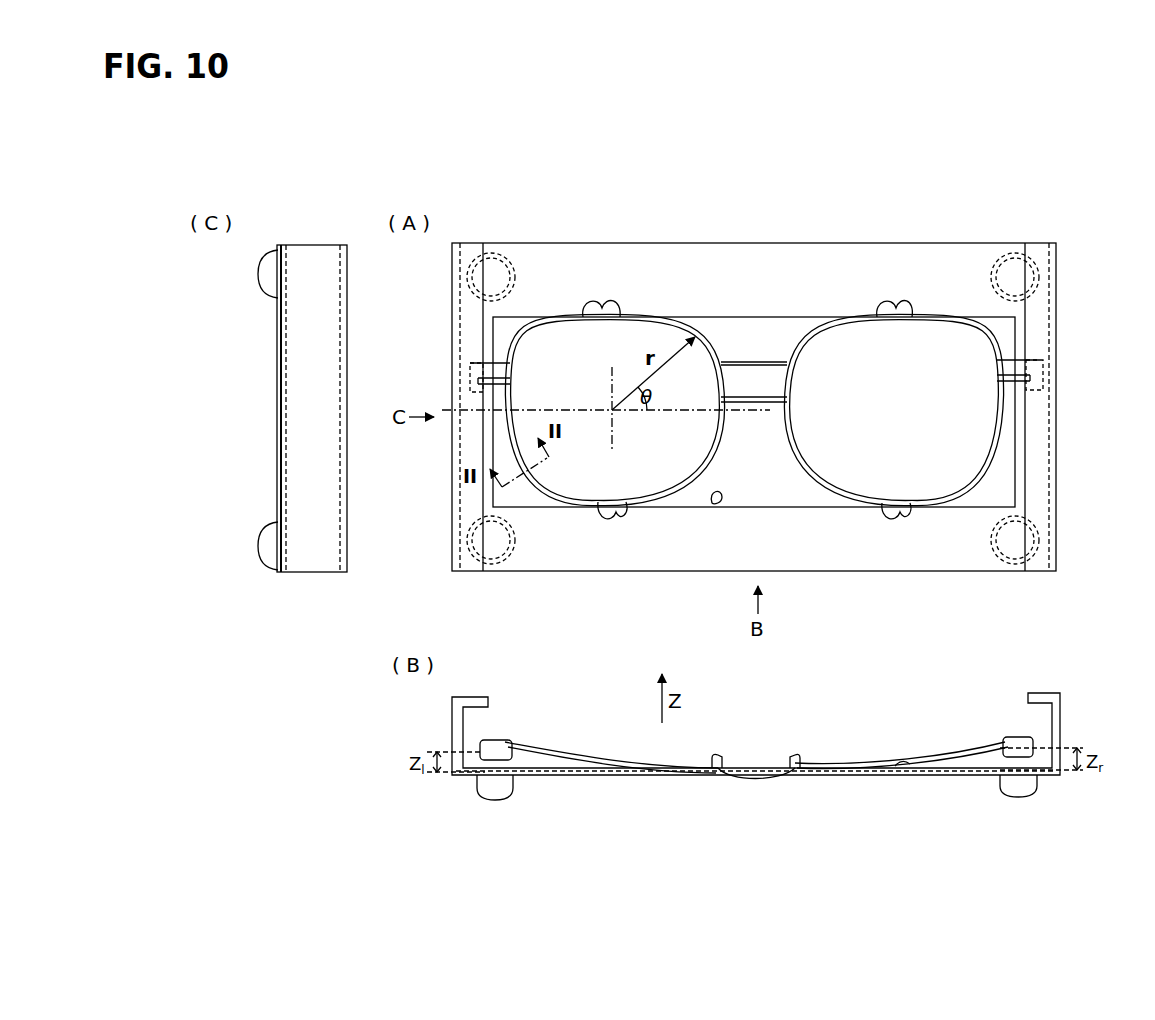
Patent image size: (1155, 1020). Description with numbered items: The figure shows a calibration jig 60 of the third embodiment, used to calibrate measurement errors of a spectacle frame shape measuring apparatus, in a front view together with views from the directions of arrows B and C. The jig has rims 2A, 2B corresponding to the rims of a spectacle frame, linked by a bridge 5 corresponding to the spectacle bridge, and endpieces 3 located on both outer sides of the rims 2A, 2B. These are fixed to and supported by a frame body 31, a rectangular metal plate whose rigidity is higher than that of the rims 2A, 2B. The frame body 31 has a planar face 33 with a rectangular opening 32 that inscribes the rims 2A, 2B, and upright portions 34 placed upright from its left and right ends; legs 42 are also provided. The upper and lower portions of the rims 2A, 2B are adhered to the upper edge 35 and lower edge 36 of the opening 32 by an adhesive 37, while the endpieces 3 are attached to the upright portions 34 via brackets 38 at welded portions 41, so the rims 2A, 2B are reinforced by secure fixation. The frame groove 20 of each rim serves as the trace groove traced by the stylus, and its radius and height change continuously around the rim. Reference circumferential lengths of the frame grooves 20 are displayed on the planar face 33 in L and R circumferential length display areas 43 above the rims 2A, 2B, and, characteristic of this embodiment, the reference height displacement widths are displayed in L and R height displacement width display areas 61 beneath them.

The rim 2A is at (540, 493).
The rim 2B is at (988, 477).
The endpiece 3 is at (503, 363).
The bridge 5 is at (741, 362).
The frame groove 20 is at (703, 457).
The frame body 31 is at (663, 573).
The opening 32 is at (712, 503).
The planar face 33 is at (918, 243).
The upright portion 34 is at (452, 462).
The upper edge 35 is at (803, 330).
The lower edge 36 is at (843, 488).
The adhesive 37 is at (586, 305).
The bracket 38 is at (470, 395).
The welded portion 41 is at (466, 729).
The leg 42 is at (513, 258).
The circumferential length display area 43 is at (643, 252).
The calibration jig 60 is at (992, 213).
The height displacement width display area 61 is at (578, 560).